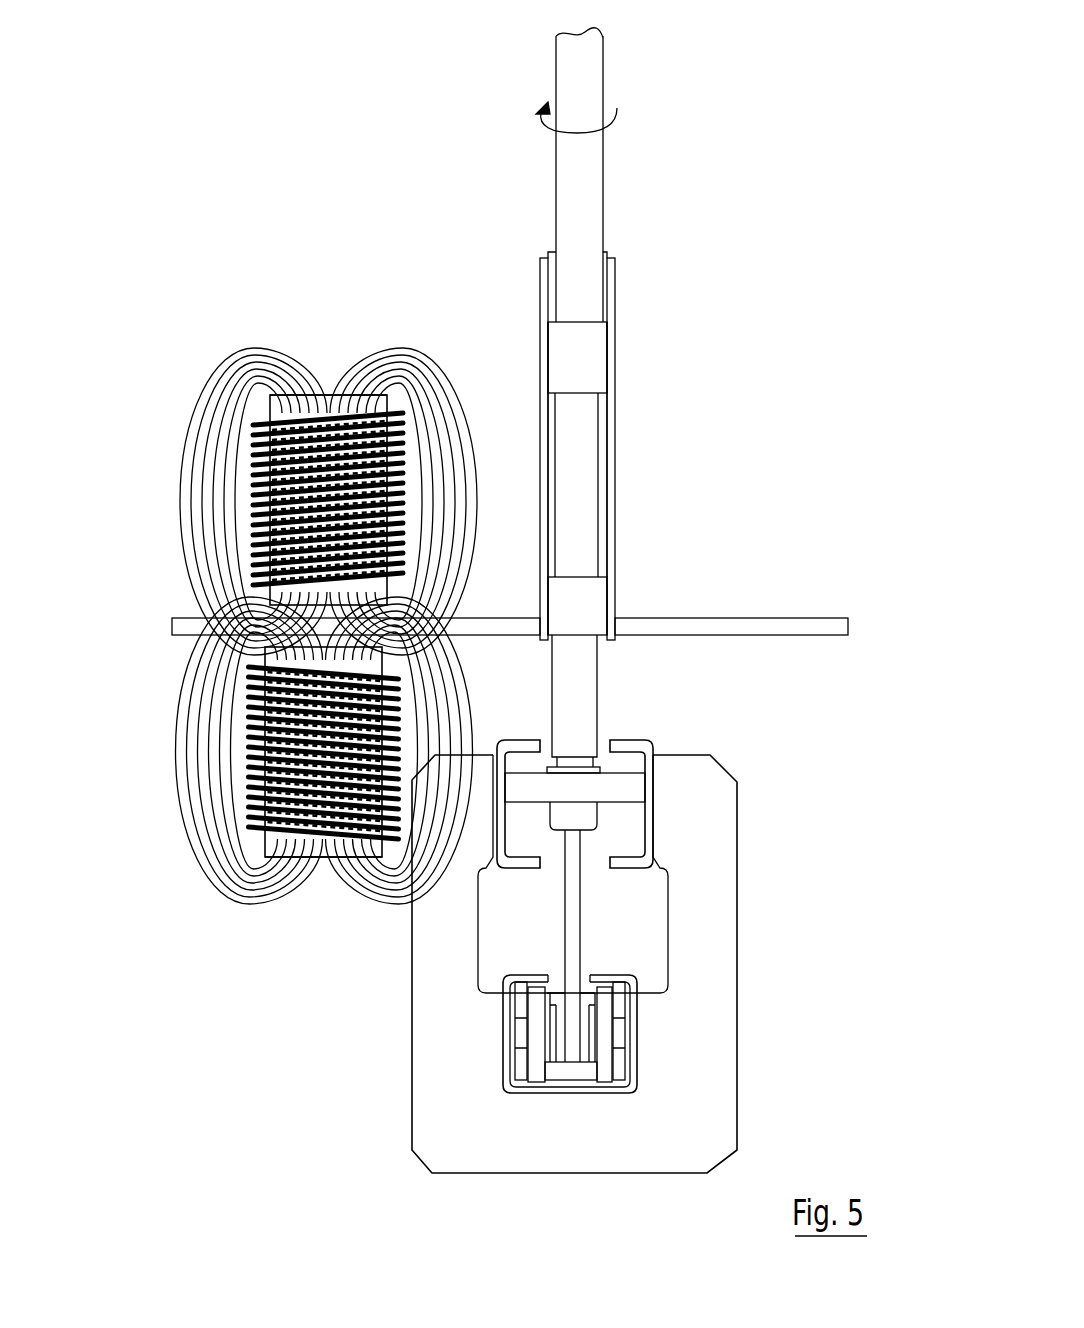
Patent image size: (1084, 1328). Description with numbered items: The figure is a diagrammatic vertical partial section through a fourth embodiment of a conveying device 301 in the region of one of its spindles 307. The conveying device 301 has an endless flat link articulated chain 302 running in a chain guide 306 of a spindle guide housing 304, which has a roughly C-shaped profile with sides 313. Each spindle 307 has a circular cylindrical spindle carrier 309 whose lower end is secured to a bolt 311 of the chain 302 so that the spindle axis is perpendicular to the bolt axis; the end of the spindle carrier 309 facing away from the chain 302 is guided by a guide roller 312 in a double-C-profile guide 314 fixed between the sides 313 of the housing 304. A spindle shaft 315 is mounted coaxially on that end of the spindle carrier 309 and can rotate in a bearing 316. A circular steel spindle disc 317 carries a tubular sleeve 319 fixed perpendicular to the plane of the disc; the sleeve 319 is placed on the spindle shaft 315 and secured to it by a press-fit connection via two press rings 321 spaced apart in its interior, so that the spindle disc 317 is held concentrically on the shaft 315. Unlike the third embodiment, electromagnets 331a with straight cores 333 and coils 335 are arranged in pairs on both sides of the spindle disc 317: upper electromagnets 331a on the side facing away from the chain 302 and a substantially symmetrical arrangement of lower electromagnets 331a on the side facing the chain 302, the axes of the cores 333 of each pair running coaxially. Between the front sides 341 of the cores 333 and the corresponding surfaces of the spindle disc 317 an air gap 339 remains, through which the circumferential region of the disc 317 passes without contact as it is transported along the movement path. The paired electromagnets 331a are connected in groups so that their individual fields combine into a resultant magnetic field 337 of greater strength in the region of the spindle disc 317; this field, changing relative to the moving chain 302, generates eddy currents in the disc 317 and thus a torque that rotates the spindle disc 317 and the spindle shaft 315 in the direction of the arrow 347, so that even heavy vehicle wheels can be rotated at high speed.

The conveying device 301 is at (322, 100).
The endless flat link articulated chain 302 is at (748, 859).
The spindle guide housing 304 is at (712, 1022).
The chain guide 306 is at (632, 1000).
The spindle 307 is at (708, 430).
The spindle carrier 309 is at (575, 935).
The bolt 311 is at (618, 1038).
The guide roller 312 is at (642, 784).
The sides 313 is at (685, 823).
The double-C-profile guide 314 is at (503, 738).
The spindle shaft 315 is at (578, 180).
The bearing 316 is at (567, 745).
The spindle disc 317 is at (795, 633).
The tubular sleeve 319 is at (610, 297).
The press rings 321 is at (583, 378).
The electromagnets 331a is at (331, 388).
The core 333 is at (325, 407).
The coils 335 is at (255, 497).
The resultant magnetic field 337 is at (447, 631).
The air gap 339 is at (210, 620).
The front sides 341 is at (428, 530).
The arrow 347 is at (585, 125).